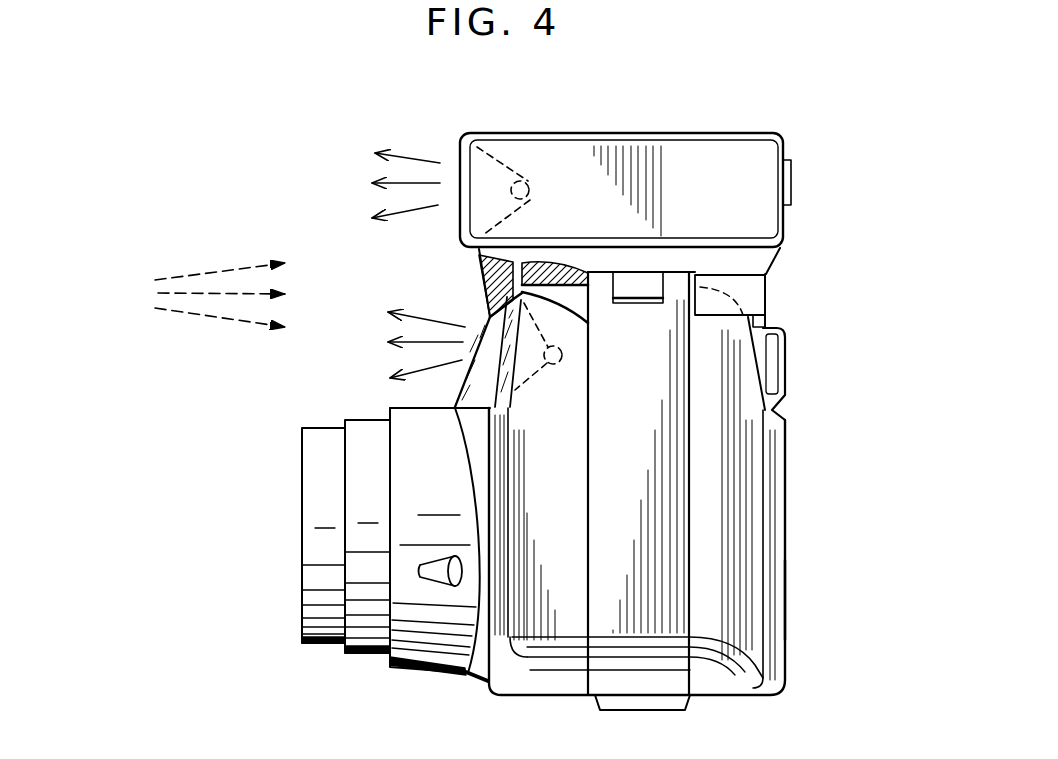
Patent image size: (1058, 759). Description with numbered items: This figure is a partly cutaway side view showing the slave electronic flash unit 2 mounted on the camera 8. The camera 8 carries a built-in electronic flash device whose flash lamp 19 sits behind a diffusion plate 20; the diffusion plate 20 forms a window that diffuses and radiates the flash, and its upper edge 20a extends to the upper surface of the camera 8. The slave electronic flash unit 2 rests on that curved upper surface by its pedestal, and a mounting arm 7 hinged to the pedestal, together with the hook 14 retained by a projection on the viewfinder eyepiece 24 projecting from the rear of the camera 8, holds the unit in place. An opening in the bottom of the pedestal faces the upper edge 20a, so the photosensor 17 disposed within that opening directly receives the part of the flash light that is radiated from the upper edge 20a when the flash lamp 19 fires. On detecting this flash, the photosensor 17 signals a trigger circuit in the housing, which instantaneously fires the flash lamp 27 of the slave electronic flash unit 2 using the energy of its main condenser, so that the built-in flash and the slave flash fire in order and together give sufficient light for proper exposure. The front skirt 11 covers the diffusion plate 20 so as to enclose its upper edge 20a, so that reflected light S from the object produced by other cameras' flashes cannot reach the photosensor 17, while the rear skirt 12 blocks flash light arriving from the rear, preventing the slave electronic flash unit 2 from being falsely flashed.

The slave electronic flash unit 2 is at (805, 120).
The flash lamp 27 is at (521, 180).
The photosensor 17 is at (520, 262).
The front skirt 11 is at (497, 300).
The diffusion plate 20 is at (511, 407).
The upper edge of diffusion plate 20a is at (589, 326).
The flash lamp 19 is at (565, 355).
The mounting arm 7 is at (620, 527).
The rear skirt 12 is at (756, 297).
The hook 14 is at (764, 325).
The eyepiece 24 is at (787, 367).
The camera 8 is at (804, 596).
The reflected light S is at (213, 295).